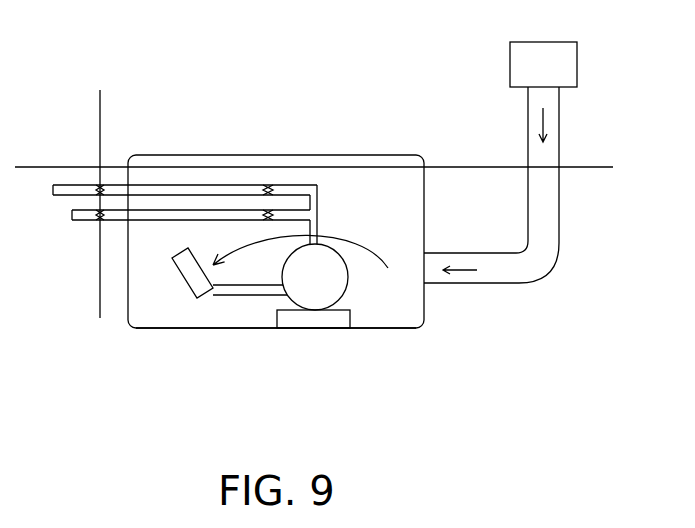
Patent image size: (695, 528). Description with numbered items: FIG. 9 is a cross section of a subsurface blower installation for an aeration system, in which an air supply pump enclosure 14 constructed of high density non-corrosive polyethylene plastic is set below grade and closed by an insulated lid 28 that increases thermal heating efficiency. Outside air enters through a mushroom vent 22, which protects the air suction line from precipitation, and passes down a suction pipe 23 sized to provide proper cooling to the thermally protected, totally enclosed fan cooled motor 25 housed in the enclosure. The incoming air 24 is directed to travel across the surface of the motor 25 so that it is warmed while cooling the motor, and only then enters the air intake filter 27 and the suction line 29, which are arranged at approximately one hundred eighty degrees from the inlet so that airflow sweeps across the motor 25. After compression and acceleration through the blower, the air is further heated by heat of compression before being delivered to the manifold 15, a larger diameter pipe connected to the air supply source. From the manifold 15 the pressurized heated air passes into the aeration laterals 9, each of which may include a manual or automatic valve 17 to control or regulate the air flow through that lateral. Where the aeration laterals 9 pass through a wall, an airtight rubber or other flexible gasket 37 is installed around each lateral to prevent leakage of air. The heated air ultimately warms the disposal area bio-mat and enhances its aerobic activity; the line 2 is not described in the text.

The vehicle roof line 2 is at (27, 167).
The aeration lateral 9 is at (63, 195).
The air supply pump enclosure 14 is at (395, 328).
The manifold 15 is at (320, 200).
The valve 17 is at (268, 210).
The mushroom vent 22 is at (577, 68).
The suction pipe 23 is at (455, 252).
The air 24 is at (300, 240).
The motor 25 is at (313, 286).
The air intake filter 27 is at (172, 266).
The insulated lid 28 is at (210, 155).
The suction line 29 is at (245, 295).
The gasket 37 is at (100, 90).